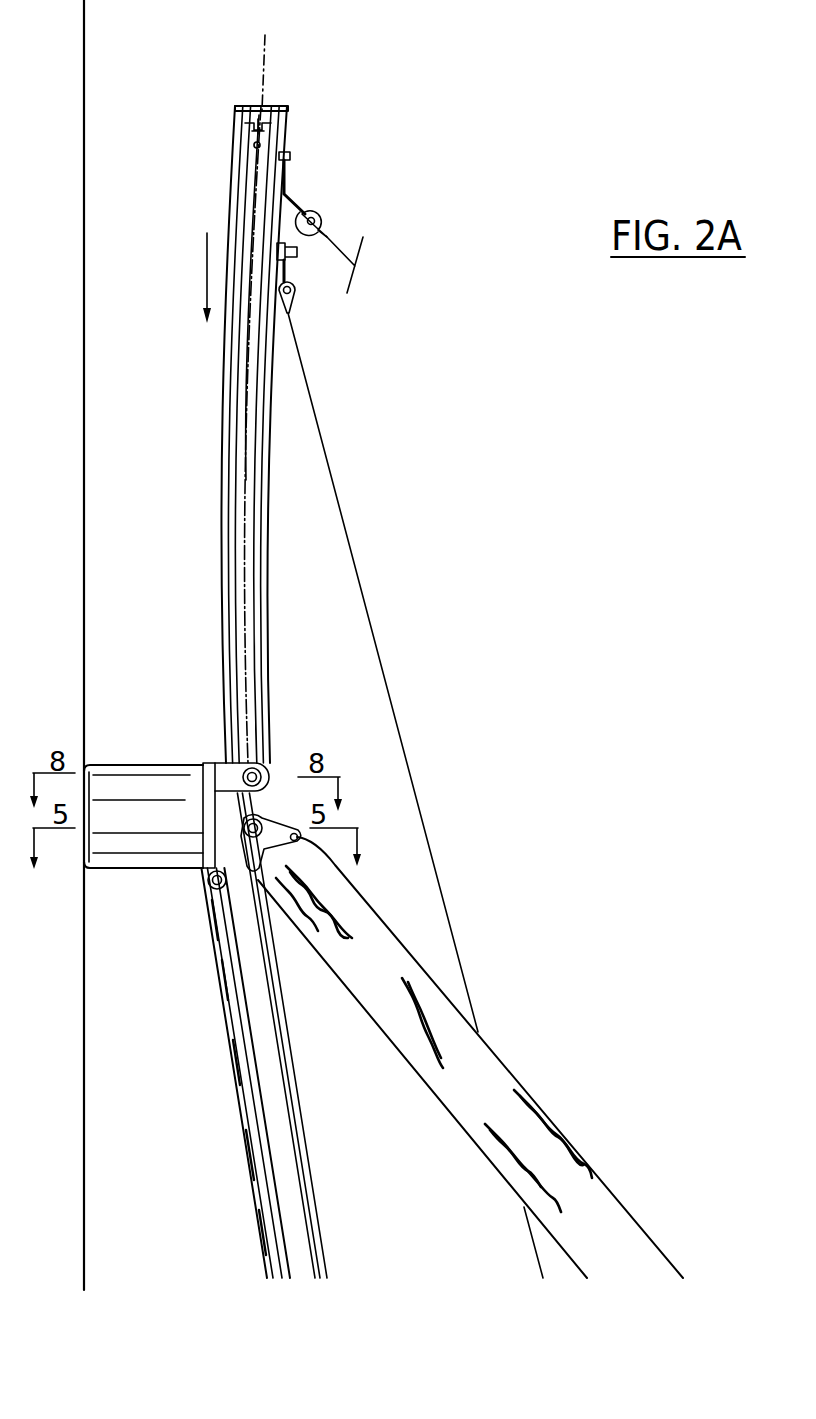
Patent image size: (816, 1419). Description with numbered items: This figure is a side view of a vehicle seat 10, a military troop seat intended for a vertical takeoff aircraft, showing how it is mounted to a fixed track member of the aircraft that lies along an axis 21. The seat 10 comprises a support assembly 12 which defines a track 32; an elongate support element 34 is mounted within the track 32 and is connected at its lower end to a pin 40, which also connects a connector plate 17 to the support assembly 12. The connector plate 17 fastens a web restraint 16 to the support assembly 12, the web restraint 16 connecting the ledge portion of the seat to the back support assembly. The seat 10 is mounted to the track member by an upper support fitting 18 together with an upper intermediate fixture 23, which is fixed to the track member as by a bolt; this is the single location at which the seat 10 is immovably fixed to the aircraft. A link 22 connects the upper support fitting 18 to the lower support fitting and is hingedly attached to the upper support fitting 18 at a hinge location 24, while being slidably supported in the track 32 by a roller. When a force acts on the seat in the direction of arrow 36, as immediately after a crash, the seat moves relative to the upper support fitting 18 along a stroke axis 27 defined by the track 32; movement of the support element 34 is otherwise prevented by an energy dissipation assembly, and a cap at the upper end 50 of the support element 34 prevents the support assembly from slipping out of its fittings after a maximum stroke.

The vehicle seat 10 is at (655, 729).
The support assembly 12 is at (218, 357).
The web restraint 16 is at (580, 1148).
The connector plate 17 is at (246, 843).
The upper support fitting 18 is at (203, 828).
The axis 21 is at (83, 1150).
The link 22 is at (243, 1130).
The upper intermediate fixture 23 is at (102, 846).
The hinge location 24 is at (208, 904).
The stroke axis 27 is at (273, 76).
The track 32 is at (253, 117).
The elongate support element 34 is at (251, 176).
The arrow 36 is at (206, 270).
The pin 40 is at (209, 893).
The upper end 50 is at (296, 101).